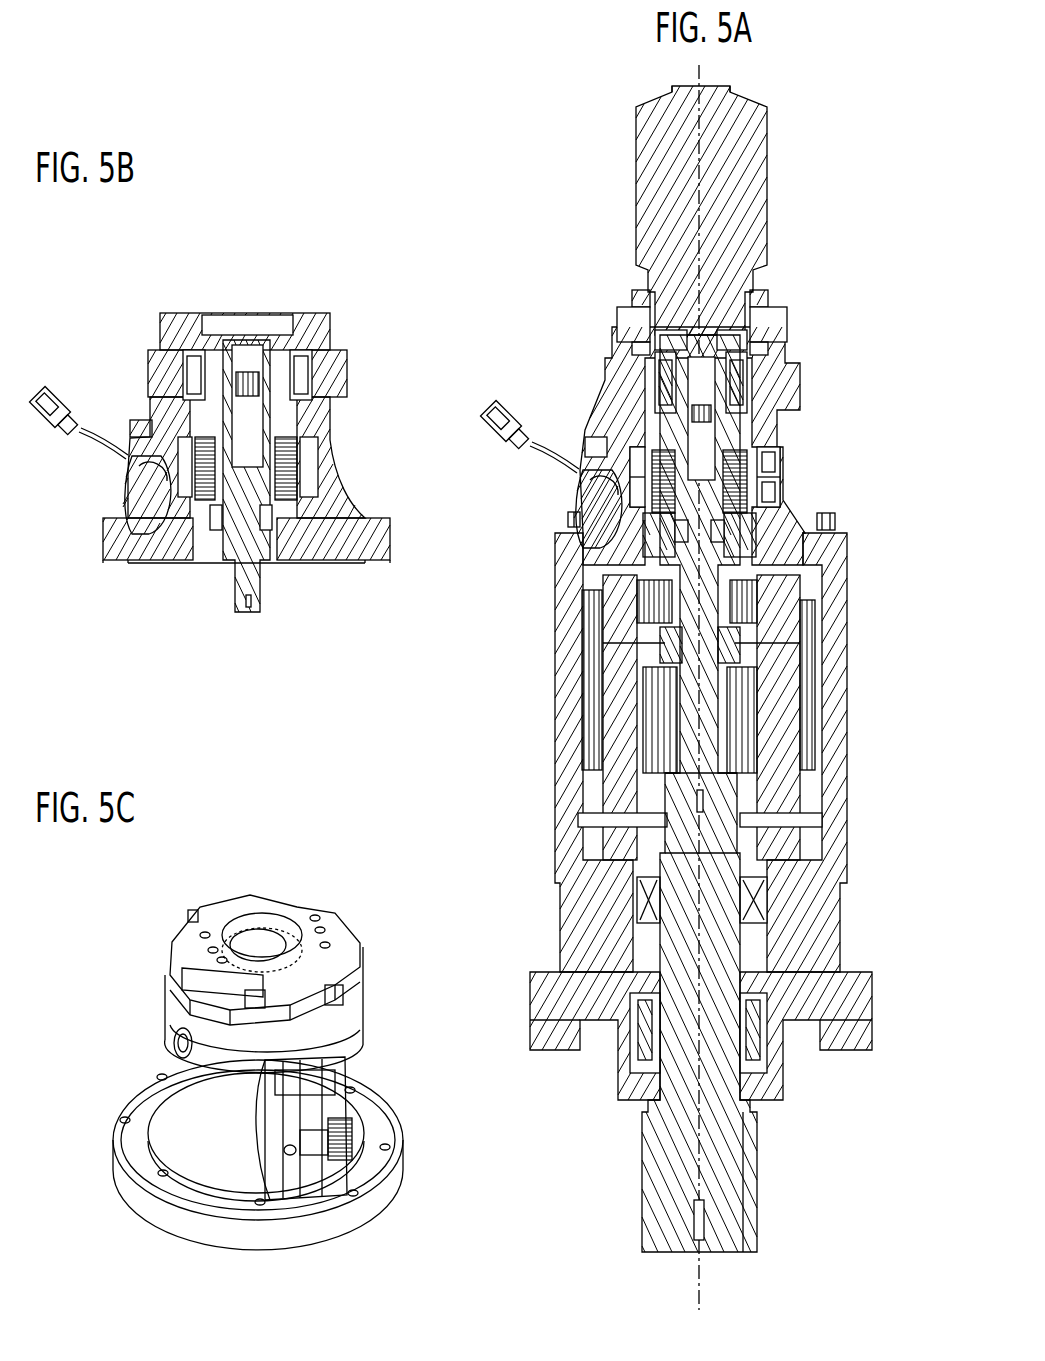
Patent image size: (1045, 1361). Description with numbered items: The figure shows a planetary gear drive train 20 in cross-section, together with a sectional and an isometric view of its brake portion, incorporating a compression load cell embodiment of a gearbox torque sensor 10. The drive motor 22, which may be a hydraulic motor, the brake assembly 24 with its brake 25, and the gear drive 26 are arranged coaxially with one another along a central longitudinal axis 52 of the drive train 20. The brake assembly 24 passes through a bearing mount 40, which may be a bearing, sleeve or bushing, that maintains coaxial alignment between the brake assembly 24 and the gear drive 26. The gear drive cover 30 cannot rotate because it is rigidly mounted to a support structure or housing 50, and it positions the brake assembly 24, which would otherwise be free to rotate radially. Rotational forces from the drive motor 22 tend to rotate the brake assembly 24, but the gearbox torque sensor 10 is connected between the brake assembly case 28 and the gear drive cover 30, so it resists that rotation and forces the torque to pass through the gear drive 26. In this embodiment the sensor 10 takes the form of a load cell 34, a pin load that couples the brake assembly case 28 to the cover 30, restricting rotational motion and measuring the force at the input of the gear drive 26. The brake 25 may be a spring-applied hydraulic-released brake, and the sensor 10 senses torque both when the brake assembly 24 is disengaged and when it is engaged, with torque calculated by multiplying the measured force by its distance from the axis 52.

In FIG. 5A, the gearbox torque sensor 10 is at (553, 500).
In FIG. 5A, the drive train 20 is at (548, 305).
In FIG. 5A, the drive motor 22 is at (753, 187).
In FIG. 5B, the brake assembly 24 is at (202, 530).
In FIG. 5A, the brake 25 is at (742, 382).
In FIG. 5A, the gear drive 26 is at (720, 725).
In FIG. 5A, the brake assembly case 28 is at (763, 422).
In FIG. 5A, the gear drive cover 30 is at (783, 527).
In FIG. 5A, the load cell 34 is at (585, 470).
In FIG. 5A, the bearing mount 40 is at (772, 452).
In FIG. 5A, the support structure or housing 50 is at (563, 712).
In FIG. 5A, the central longitudinal axis 52 is at (700, 1275).